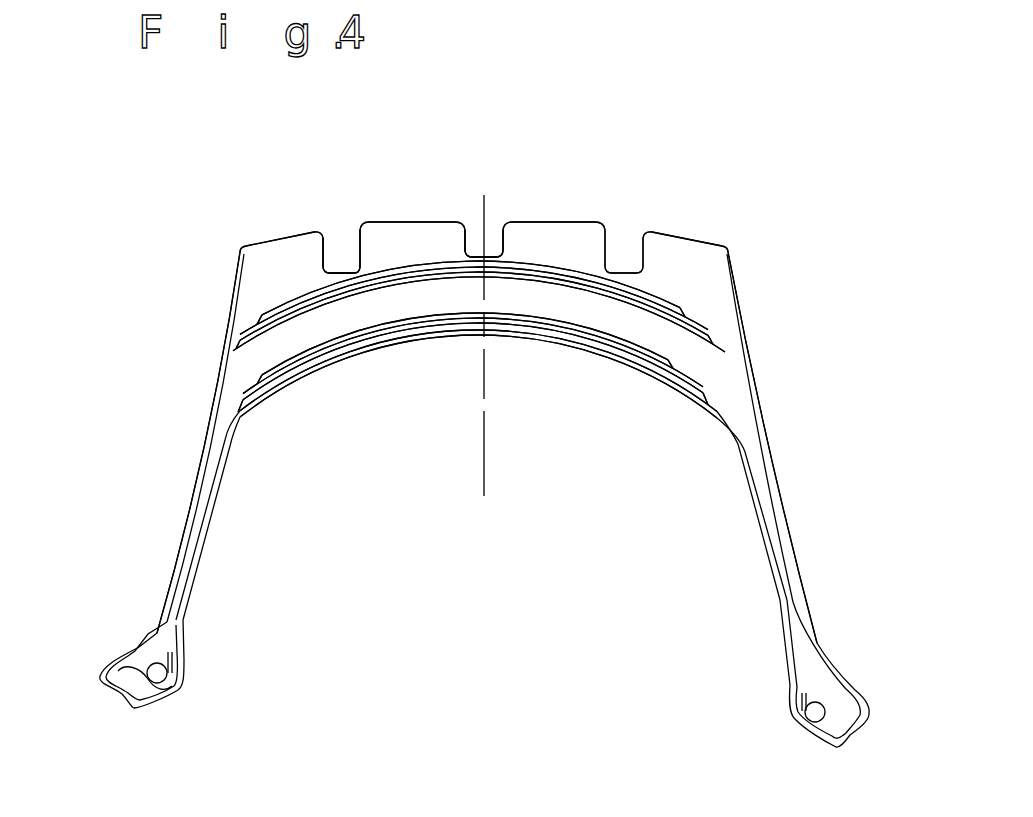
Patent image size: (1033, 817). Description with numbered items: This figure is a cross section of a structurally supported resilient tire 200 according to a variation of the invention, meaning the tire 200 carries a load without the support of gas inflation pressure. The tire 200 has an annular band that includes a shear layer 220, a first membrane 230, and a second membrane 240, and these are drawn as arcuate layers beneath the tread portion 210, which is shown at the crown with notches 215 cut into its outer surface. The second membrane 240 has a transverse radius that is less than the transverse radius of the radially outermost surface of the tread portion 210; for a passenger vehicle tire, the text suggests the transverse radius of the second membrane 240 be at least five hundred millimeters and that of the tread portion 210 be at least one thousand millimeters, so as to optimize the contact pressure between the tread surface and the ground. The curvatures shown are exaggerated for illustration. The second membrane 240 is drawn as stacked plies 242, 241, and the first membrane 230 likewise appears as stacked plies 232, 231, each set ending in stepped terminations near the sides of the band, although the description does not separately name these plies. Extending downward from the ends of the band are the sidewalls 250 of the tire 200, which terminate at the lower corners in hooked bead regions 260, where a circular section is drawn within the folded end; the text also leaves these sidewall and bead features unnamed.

The tire 200 is at (181, 315).
The tread portion 210 is at (258, 237).
The notch 215 is at (490, 240).
The second membrane 240 is at (573, 262).
The outer upper cushion sheet 242 is at (681, 306).
The inner upper cushion sheet 241 is at (718, 330).
The shear layer 220 is at (449, 292).
The first membrane 230 is at (569, 343).
The outer lower cushion sheet 232 is at (673, 367).
The inner lower cushion sheet 231 is at (712, 390).
The side wall 250 is at (182, 487).
The rim hook portion 260 is at (121, 644).